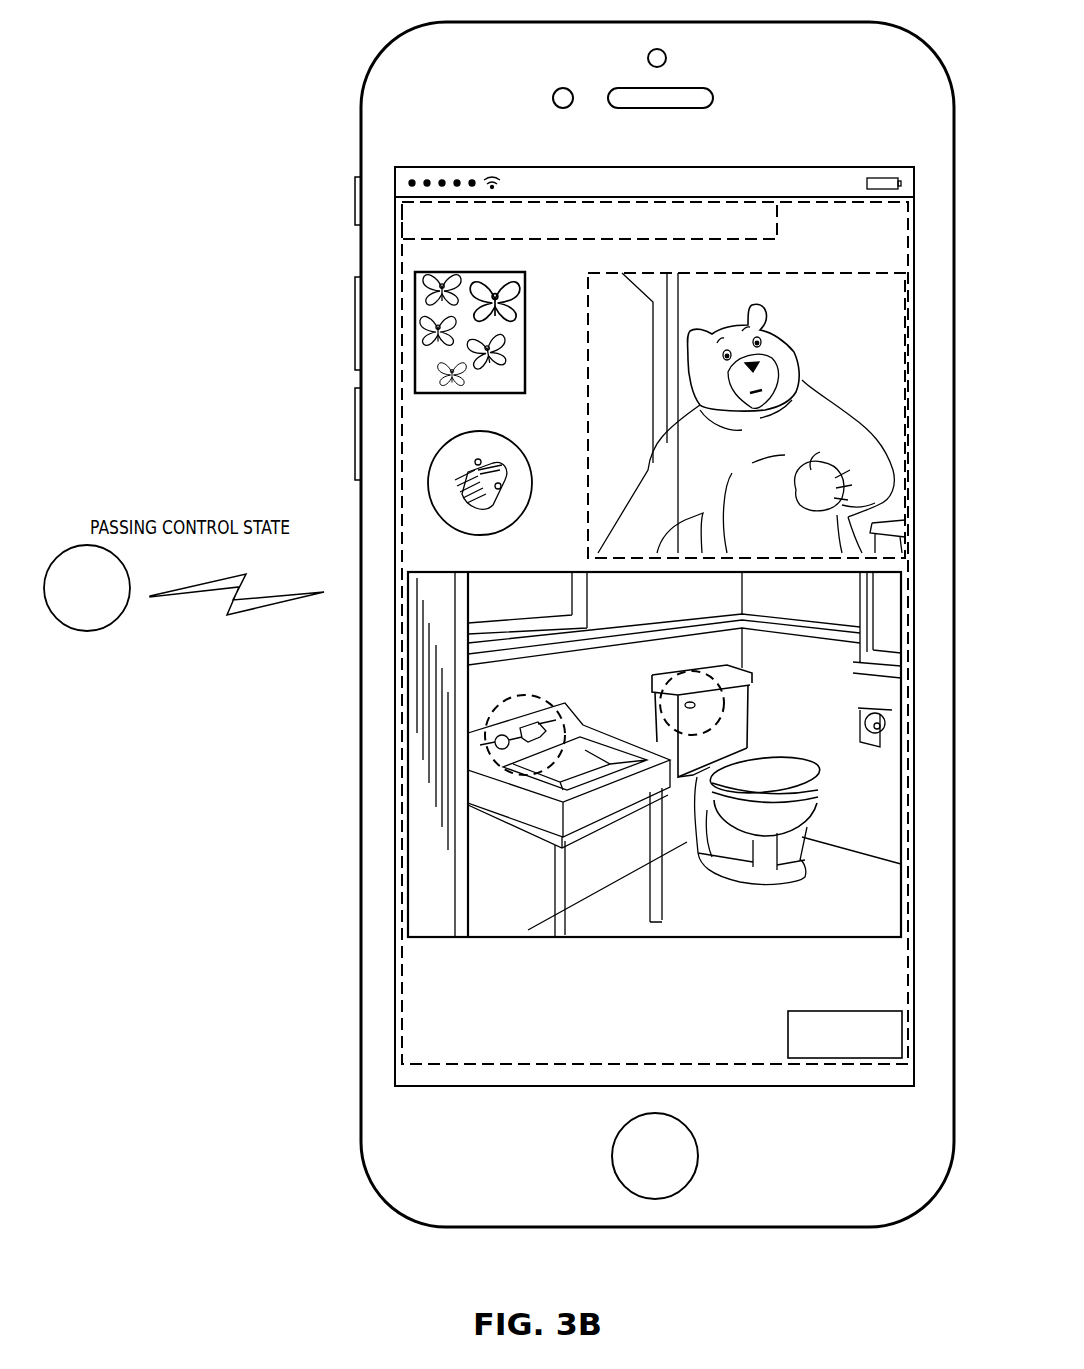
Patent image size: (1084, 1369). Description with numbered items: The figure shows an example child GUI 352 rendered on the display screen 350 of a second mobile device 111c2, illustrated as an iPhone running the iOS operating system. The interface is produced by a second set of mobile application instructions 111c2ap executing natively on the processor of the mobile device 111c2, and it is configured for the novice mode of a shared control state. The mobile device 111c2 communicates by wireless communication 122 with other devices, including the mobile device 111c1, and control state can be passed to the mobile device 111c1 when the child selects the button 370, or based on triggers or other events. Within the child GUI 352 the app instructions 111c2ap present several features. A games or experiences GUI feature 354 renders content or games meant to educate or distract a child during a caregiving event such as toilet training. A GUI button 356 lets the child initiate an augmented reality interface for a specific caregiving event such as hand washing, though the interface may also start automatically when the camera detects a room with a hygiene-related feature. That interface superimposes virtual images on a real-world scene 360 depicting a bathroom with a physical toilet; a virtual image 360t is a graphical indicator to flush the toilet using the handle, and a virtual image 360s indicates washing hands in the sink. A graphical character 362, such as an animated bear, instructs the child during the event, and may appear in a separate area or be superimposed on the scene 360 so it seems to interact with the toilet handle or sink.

The mobile device 111c2 is at (333, 42).
The display screen 350 is at (413, 183).
The child GUI 352 is at (430, 257).
The second set of mobile application instructions 111c2ap is at (777, 221).
The games or experiences GUI feature 354 is at (527, 340).
The graphical character 362 is at (625, 420).
The GUI button 356 is at (512, 448).
The mobile device 111c1 is at (87, 588).
The wireless communication 122 is at (231, 575).
The scene 360 is at (600, 754).
The virtual image 360s is at (543, 697).
The virtual image 360t is at (705, 665).
The button 370 is at (788, 1030).